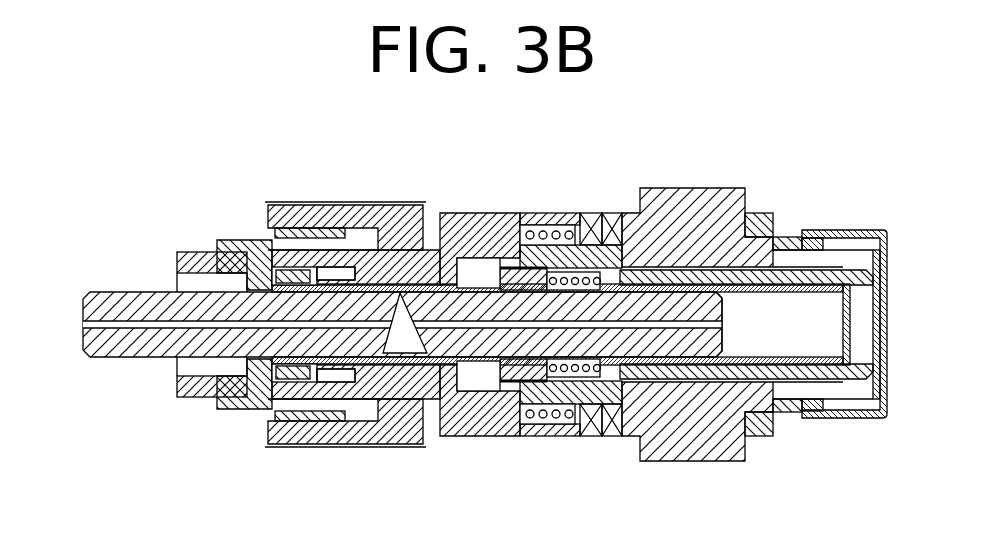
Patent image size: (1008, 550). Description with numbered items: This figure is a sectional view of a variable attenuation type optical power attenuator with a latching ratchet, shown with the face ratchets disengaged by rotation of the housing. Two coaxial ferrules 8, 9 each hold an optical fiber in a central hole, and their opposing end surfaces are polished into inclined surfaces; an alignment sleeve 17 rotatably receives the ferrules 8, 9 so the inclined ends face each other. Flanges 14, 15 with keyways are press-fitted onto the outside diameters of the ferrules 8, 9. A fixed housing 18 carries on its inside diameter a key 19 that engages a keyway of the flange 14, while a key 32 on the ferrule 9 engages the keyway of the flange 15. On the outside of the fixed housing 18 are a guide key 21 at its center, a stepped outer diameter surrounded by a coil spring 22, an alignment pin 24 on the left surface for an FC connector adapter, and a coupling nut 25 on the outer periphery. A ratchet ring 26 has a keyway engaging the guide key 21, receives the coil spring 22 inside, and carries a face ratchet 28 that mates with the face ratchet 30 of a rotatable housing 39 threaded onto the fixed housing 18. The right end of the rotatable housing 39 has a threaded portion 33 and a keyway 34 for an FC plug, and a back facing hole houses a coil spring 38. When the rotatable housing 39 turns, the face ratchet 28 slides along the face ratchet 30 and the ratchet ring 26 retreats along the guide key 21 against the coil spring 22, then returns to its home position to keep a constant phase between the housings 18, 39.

The ferrule 8 is at (123, 292).
The ferrule 9 is at (722, 306).
The flange 14 is at (318, 384).
The flange 15 is at (520, 433).
The alignment sleeve 17 is at (396, 283).
The fixed housing 18 is at (218, 398).
The key 19 is at (292, 270).
The guide key 21 is at (535, 222).
The coil spring 22 is at (543, 436).
The alignment pin 24 is at (236, 241).
The coupling nut 25 is at (350, 205).
The ratchet ring 26 is at (567, 213).
The face ratchet 28 is at (596, 213).
The face ratchet 30 is at (612, 213).
The key 32 is at (508, 393).
The threaded portion 33 is at (847, 230).
The keyway 34 is at (863, 257).
The coil spring 38 is at (607, 436).
The rotatable housing 39 is at (693, 188).